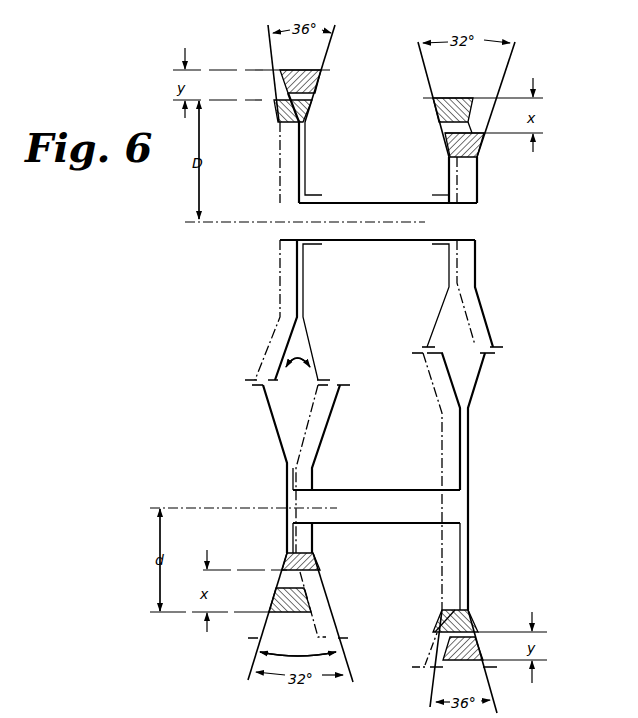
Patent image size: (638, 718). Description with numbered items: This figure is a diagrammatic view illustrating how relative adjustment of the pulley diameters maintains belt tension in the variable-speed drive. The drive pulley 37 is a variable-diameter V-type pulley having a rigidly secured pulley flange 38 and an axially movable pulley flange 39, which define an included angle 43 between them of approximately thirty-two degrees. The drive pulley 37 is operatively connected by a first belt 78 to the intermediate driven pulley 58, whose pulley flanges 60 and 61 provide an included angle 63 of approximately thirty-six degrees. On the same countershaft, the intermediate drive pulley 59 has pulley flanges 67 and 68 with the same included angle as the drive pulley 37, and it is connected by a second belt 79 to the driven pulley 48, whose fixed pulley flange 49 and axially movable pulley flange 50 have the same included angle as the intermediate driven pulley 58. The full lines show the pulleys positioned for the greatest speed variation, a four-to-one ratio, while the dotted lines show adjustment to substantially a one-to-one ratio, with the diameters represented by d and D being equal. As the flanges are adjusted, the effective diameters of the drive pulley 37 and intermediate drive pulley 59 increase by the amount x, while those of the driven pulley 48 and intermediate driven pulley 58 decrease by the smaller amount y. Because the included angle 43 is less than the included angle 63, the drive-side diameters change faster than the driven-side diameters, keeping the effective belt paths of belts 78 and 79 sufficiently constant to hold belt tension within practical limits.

The drive pulley 37 is at (273, 457).
The pulley flange 38 is at (268, 413).
The pulley flange 39 is at (328, 431).
The included angle 43 is at (270, 657).
The driven pulley 48 is at (476, 452).
The pulley flange 49 is at (468, 438).
The pulley flange 50 is at (458, 457).
The intermediate driven pulley 58 is at (272, 170).
The intermediate drive pulley 59 is at (484, 182).
The pulley flange 60 is at (298, 181).
The pulley flange 61 is at (306, 156).
The included angle 63 is at (297, 352).
The pulley flange 67 is at (449, 268).
The pulley flange 68 is at (476, 262).
The first belt 78 is at (312, 85).
The second belt 79 is at (450, 146).